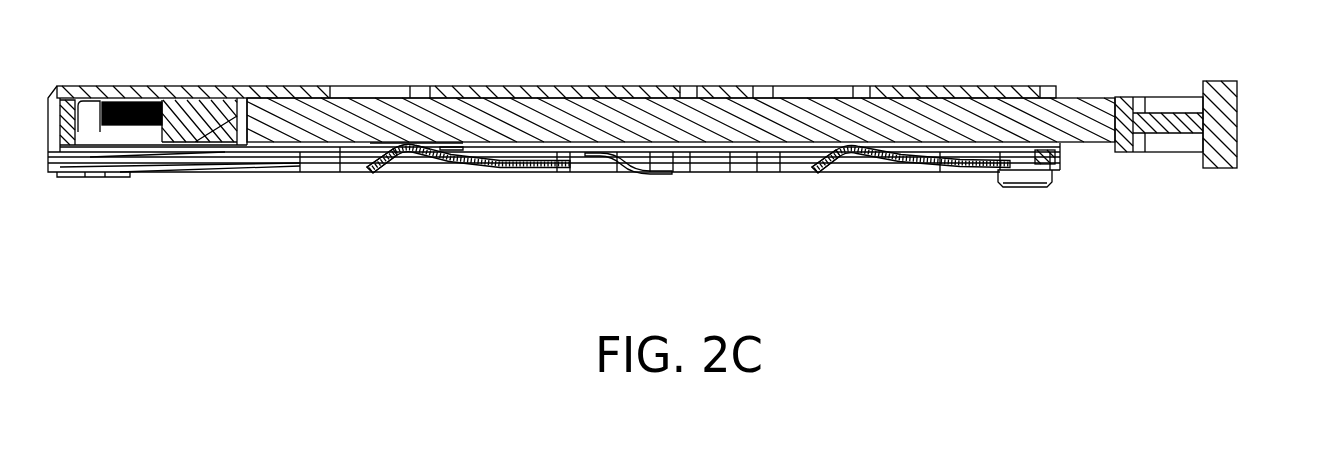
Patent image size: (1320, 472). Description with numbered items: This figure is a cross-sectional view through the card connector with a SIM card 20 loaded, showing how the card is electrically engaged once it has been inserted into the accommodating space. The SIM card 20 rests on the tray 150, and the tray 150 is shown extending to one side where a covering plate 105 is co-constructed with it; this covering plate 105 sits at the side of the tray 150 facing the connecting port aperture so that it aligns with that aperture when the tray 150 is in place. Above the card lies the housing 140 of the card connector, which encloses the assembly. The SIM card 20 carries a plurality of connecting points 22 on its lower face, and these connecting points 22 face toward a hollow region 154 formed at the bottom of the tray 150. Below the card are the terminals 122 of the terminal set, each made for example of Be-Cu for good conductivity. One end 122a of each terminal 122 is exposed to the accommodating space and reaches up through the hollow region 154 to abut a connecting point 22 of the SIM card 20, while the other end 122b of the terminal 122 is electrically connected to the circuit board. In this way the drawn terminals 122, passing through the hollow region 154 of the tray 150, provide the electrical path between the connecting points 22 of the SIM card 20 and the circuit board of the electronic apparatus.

The SIM card 20 is at (1087, 113).
The connecting points 22 is at (370, 150).
The covering plate 105 is at (1222, 124).
The terminal 122 is at (506, 168).
The end of terminal 122a is at (410, 150).
The other end of terminal 122b is at (628, 165).
The housing 140 is at (1002, 88).
The tray 150 is at (1172, 122).
The hollow region 154 is at (1052, 151).